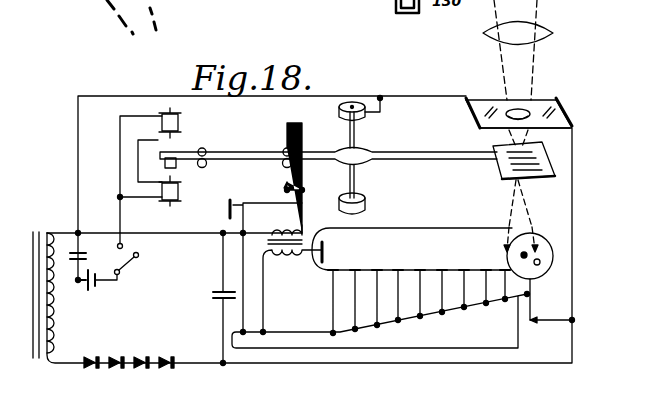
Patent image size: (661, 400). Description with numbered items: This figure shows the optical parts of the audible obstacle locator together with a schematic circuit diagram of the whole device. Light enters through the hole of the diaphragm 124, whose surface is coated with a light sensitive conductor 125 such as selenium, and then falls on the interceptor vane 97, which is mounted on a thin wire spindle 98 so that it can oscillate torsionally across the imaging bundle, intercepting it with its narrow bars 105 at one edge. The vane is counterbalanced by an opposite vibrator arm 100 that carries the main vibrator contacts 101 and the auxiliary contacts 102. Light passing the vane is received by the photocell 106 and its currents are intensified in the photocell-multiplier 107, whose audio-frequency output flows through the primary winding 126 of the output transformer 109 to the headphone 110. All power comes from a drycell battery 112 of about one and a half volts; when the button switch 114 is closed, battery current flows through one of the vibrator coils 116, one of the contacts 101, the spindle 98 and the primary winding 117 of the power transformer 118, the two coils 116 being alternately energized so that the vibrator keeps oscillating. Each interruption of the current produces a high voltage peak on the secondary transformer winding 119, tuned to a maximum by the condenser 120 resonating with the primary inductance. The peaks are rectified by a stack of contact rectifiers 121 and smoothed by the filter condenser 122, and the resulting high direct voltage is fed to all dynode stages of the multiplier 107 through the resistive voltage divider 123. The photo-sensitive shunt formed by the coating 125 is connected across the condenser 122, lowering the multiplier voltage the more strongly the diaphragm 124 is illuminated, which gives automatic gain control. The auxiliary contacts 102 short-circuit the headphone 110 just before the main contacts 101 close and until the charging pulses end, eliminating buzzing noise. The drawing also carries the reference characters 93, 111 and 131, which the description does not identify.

The element of adjacent figure 93 is at (75, 0).
The lens 111 is at (556, 33).
The light sensitive conductor coating 125 is at (550, 106).
The diaphragm 124 is at (484, 138).
The interceptor vane 97 is at (552, 172).
The vibrator arm 100 is at (249, 152).
The vibrator contacts 101 is at (207, 173).
The auxiliary contacts 102 is at (287, 136).
The arm 131 is at (392, 172).
The spindle 98 is at (352, 185).
The vibrator coils 116 is at (176, 157).
The narrow bars 105 is at (158, 143).
The headphone 110 is at (215, 221).
The power transformer 118 is at (36, 282).
The secondary transformer winding 119 is at (60, 331).
The primary winding 117 is at (45, 268).
The condenser 120 is at (88, 262).
The button switch 114 is at (125, 256).
The drycell battery 112 is at (96, 291).
The contact rectifiers 121 is at (129, 352).
The filter condenser 122 is at (210, 299).
The output transformer 109 is at (305, 225).
The primary winding of the output transformer 126 is at (282, 287).
The photocell-multiplier 107 is at (413, 226).
The photocell 106 is at (540, 260).
The resistive voltage divider 123 is at (379, 321).